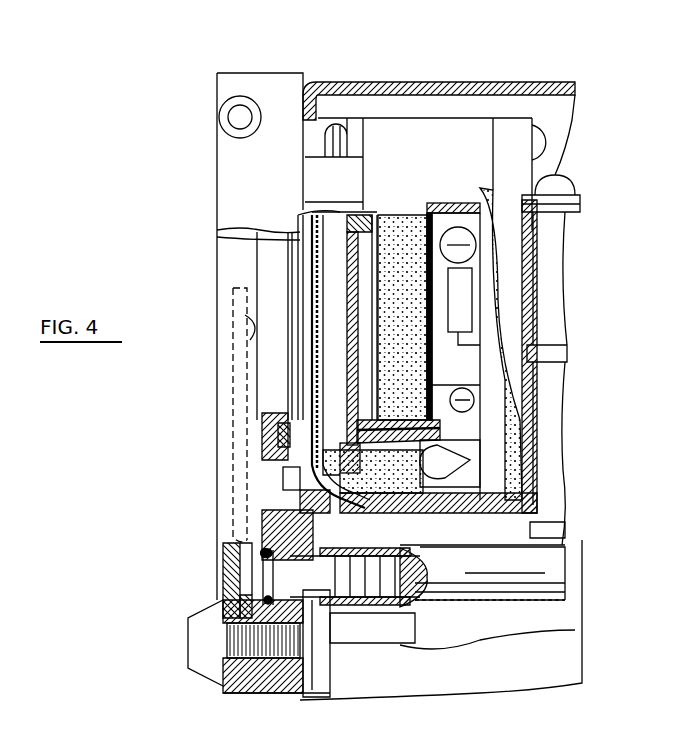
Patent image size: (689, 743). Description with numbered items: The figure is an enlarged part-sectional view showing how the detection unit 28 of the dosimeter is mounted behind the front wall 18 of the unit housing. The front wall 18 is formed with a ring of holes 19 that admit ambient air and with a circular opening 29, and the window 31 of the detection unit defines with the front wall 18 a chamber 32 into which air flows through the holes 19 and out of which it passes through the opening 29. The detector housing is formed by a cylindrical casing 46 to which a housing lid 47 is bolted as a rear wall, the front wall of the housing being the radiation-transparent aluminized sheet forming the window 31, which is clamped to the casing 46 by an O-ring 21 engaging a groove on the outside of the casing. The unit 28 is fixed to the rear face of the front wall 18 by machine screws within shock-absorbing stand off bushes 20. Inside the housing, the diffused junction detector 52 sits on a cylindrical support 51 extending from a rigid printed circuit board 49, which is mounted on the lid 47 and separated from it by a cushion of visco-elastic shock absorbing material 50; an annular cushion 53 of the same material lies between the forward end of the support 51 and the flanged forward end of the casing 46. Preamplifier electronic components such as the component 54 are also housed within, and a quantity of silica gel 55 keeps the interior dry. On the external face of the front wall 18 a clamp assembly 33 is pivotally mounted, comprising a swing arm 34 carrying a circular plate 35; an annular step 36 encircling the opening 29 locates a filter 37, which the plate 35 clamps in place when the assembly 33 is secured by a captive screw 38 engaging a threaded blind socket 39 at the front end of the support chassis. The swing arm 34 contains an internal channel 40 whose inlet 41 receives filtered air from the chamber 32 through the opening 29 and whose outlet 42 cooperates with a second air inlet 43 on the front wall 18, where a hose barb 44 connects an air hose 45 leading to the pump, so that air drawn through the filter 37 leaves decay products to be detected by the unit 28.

The front wall 18 is at (232, 147).
The holes 19 is at (290, 483).
The stand off bushes 20 is at (318, 176).
The O-ring 21 is at (338, 110).
The detection unit 28 is at (512, 108).
The circular opening 29 is at (300, 255).
The window 31 is at (320, 322).
The chamber 32 is at (300, 232).
The clamp assembly 33 is at (212, 404).
The swing arm 34 is at (215, 515).
The circular plate 35 is at (265, 443).
The annular step 36 is at (283, 470).
The filter 37 is at (288, 343).
The captive screw 38 is at (250, 640).
The threaded blind socket 39 is at (300, 682).
The internal channel 40 is at (235, 368).
The inlet 41 is at (248, 332).
The outlet 42 is at (250, 580).
The second air inlet 43 is at (305, 535).
The hose barb 44 is at (345, 600).
The air hose 45 is at (500, 575).
The cylindrical casing 46 is at (447, 128).
The housing lid 47 is at (515, 143).
The printed circuit board 49 is at (500, 230).
The shock absorbing material 50 is at (515, 430).
The cylindrical support 51 is at (467, 433).
The diffused junction detector 52 is at (350, 226).
The annular cushion 53 is at (415, 500).
The preamplifier electronic component 54 is at (437, 465).
The silica gel 55 is at (424, 306).